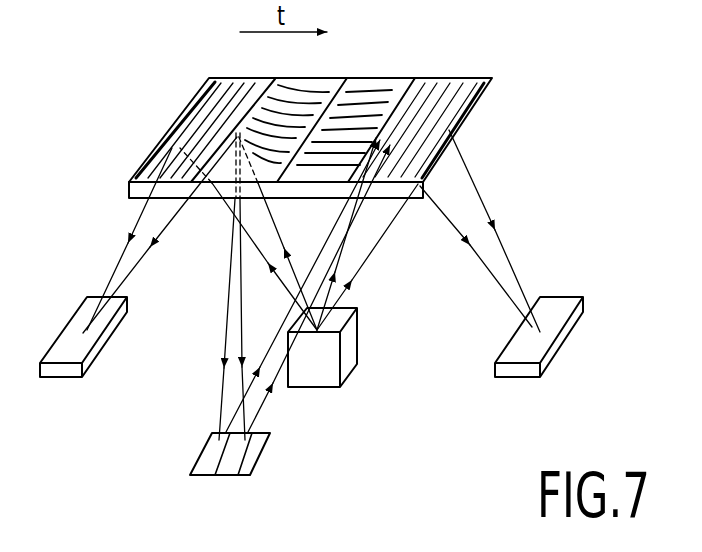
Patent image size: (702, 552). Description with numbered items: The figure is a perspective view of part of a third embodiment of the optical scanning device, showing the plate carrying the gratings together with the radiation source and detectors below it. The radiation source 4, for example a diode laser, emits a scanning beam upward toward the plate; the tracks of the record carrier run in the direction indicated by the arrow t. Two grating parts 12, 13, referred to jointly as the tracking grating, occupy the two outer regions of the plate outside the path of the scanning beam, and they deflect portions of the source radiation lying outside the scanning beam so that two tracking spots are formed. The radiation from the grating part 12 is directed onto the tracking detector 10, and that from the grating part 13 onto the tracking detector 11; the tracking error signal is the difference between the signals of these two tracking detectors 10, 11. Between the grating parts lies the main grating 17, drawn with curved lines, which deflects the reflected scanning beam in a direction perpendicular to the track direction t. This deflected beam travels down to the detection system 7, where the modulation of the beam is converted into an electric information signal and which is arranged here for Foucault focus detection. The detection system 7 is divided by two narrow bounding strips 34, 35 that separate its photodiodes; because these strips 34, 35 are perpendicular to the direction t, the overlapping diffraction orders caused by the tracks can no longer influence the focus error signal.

The radiation source 4 is at (318, 373).
The detection system 7 is at (238, 477).
The tracking detector 10 is at (73, 345).
The tracking detector 11 is at (525, 352).
The grating part 12 is at (245, 88).
The grating part 13 is at (447, 86).
The main grating 17 is at (370, 90).
The narrow strip 34 is at (212, 478).
The narrow strip 35 is at (240, 478).